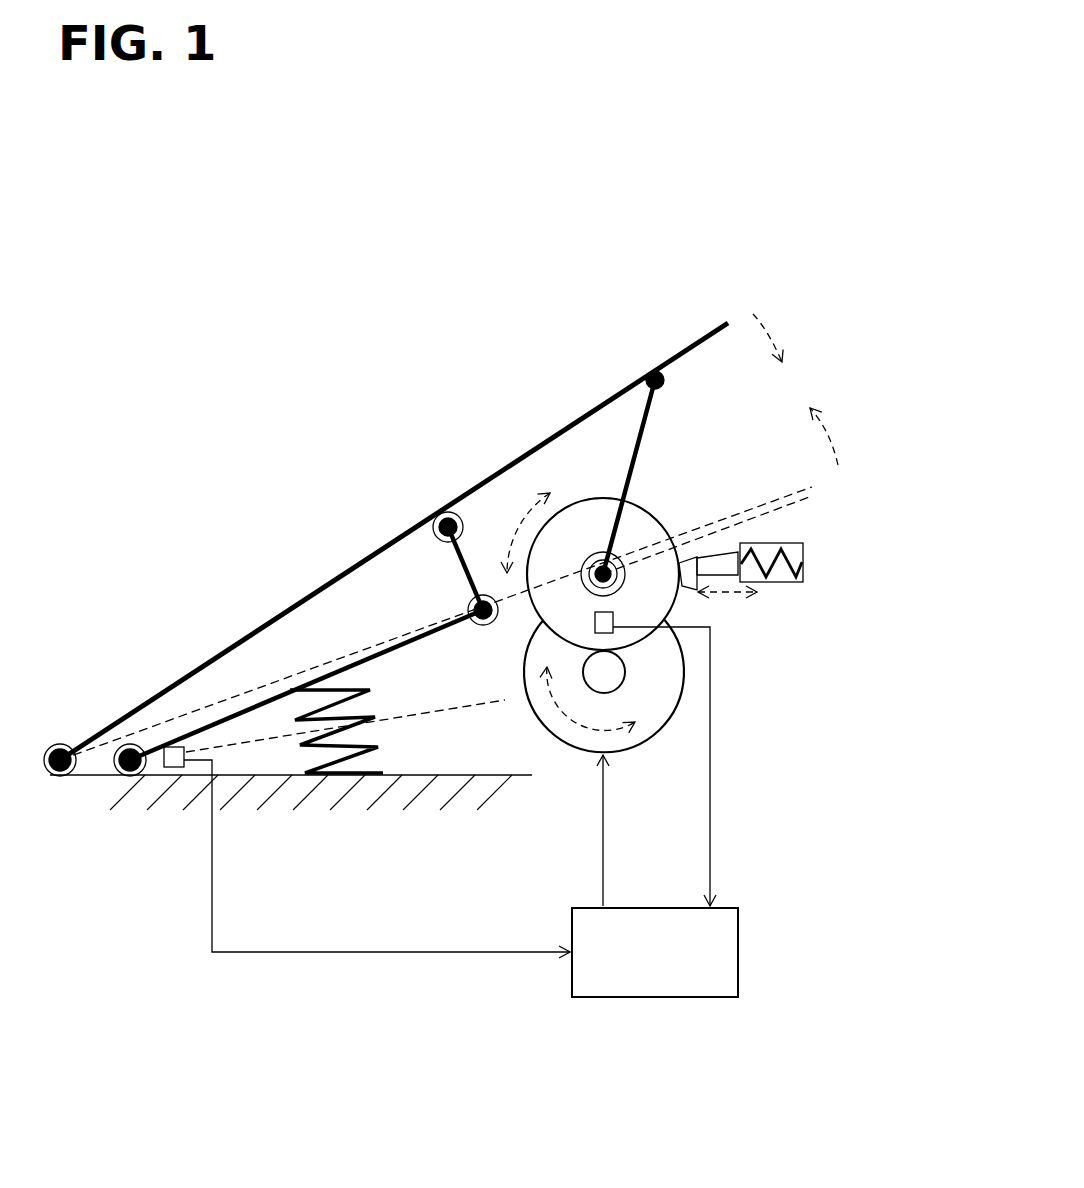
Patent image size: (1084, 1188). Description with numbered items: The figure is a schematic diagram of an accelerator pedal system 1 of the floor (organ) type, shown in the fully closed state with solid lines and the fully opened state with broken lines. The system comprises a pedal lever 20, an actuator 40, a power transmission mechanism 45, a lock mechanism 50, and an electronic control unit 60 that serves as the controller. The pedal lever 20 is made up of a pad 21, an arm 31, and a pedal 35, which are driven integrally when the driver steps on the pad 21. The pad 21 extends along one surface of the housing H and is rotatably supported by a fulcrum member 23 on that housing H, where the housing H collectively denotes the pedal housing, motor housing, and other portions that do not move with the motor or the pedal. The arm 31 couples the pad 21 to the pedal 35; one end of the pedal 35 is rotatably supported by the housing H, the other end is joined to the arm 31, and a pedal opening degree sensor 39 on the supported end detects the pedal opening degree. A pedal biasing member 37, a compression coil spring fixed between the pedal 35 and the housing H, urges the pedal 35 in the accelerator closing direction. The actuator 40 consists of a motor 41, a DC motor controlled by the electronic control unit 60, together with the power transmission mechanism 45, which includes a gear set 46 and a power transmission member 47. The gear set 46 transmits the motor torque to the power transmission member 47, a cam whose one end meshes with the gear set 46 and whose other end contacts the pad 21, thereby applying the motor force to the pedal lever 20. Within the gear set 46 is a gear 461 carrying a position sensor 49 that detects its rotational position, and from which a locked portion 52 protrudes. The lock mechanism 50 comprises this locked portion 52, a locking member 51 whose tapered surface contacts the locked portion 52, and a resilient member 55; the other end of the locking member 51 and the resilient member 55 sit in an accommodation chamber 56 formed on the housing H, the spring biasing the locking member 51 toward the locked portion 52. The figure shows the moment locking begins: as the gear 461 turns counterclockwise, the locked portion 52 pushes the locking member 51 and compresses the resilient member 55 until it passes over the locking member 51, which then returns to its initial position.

The accelerator pedal system 1 is at (130, 950).
The pedal lever 20 is at (140, 665).
The pad 21 is at (314, 592).
The fulcrum member 23 is at (60, 744).
The arm 31 is at (462, 565).
The pedal 35 is at (242, 705).
The pedal biasing member 37 is at (367, 752).
The pedal opening degree sensor 39 is at (175, 770).
The actuator 40 is at (617, 763).
The motor 41 is at (570, 742).
The power transmission mechanism 45 is at (660, 440).
The gear set 46 is at (580, 496).
The gear 461 is at (598, 518).
The power transmission member 47 is at (648, 430).
The position sensor 49 is at (594, 622).
The lock mechanism 50 is at (812, 532).
The locking member 51 is at (722, 552).
The locked portion 52 is at (690, 560).
The resilient member 55 is at (770, 545).
The accommodation chamber 56 is at (782, 582).
The electronic control unit 60 is at (739, 930).
The housing H is at (491, 780).